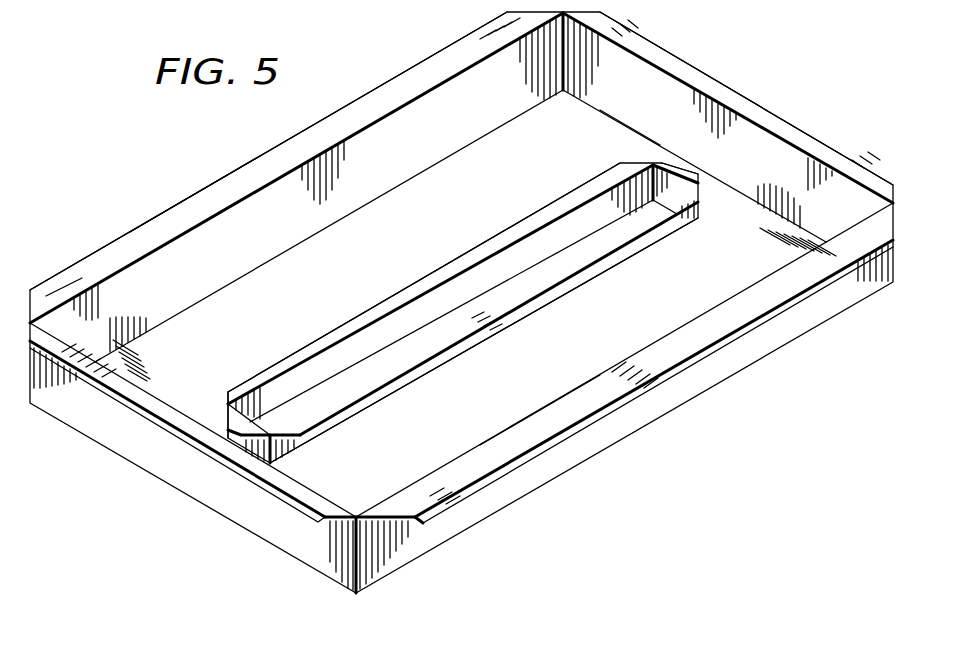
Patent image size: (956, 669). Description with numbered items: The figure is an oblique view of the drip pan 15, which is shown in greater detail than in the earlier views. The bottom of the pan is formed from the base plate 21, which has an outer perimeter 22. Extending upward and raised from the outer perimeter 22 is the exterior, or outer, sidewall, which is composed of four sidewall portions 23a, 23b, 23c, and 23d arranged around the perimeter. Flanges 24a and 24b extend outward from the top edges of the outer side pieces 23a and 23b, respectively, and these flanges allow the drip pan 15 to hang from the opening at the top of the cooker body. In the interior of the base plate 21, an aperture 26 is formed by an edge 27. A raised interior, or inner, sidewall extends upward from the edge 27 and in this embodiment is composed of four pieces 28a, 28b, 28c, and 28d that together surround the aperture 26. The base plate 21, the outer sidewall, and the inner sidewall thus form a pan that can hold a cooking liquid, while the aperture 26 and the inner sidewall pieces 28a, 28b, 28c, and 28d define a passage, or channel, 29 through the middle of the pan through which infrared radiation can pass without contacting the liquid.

The drip pan 15 is at (461, 302).
The base plate 21 is at (515, 128).
The outer perimeter 22 is at (650, 141).
The sidewall portion 23a is at (400, 120).
The sidewall portion 23b is at (637, 423).
The sidewall portion 23c is at (735, 120).
The sidewall portion 23d is at (139, 462).
The flange 24a is at (169, 214).
The flange 24b is at (523, 423).
The aperture 26 is at (441, 296).
The edge 27 is at (534, 256).
The inner sidewall piece 28a is at (403, 297).
The inner sidewall piece 28b is at (375, 403).
The inner sidewall piece 28c is at (672, 184).
The inner sidewall piece 28d is at (246, 450).
The channel 29 is at (647, 268).